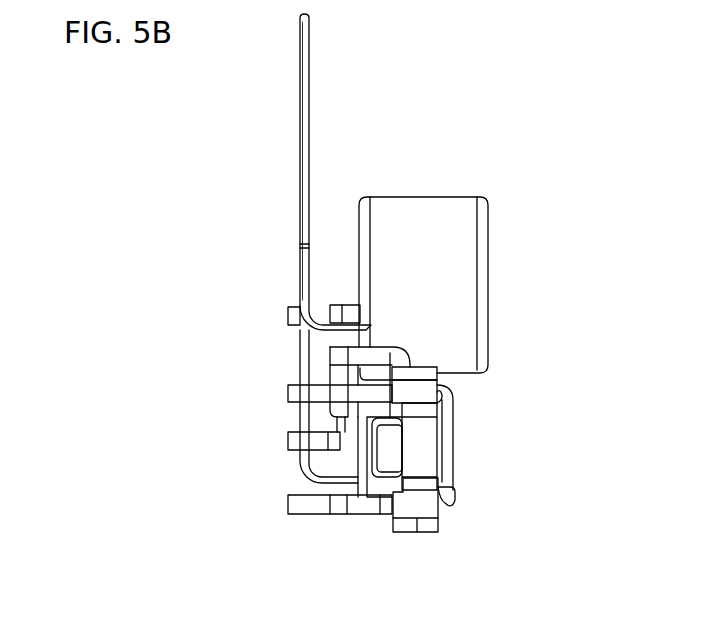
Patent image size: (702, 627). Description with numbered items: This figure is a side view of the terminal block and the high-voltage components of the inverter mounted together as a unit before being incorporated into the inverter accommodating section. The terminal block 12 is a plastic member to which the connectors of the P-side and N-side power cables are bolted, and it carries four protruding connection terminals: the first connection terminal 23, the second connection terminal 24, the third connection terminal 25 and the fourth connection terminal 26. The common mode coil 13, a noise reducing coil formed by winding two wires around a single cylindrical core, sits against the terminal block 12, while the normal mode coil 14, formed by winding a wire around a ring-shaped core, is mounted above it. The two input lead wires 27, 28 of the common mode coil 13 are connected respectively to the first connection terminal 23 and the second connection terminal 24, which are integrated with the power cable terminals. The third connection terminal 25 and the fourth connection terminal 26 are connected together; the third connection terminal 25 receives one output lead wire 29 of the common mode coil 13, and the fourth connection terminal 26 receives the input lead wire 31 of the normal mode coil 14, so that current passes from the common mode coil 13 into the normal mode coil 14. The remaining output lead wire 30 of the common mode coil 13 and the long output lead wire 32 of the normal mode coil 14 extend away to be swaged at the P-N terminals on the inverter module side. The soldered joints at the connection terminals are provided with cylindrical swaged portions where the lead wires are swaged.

The terminal block 12 is at (415, 510).
The common mode coil 13 is at (445, 447).
The normal mode coil 14 is at (468, 240).
The first connection terminal 23 is at (290, 395).
The second connection terminal 24 is at (292, 505).
The third connection terminal 25 is at (288, 442).
The fourth connection terminal 26 is at (290, 313).
The input lead wire 27 is at (453, 397).
The input lead wire 28 is at (450, 503).
The output lead wire 29 is at (350, 437).
The output lead wire 30 is at (298, 357).
The input lead wire 31 is at (352, 312).
The output lead wire 32 is at (302, 70).